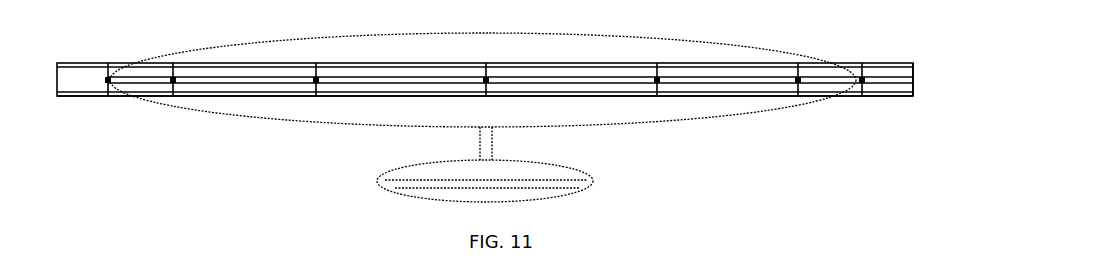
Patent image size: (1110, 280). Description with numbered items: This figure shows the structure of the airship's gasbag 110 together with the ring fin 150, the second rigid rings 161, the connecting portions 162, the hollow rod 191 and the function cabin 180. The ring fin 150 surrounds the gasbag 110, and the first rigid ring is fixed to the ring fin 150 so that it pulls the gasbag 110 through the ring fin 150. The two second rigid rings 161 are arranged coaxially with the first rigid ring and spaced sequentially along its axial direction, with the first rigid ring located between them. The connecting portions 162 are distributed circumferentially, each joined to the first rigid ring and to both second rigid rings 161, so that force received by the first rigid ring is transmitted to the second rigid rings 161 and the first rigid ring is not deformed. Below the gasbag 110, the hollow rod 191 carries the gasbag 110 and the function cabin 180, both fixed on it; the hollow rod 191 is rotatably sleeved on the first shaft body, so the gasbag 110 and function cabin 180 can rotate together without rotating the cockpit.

The gasbag 110 is at (710, 53).
The second rigid ring 161 is at (838, 81).
The ring fin 150 is at (863, 80).
The connecting portion 162 is at (912, 86).
The hollow rod 191 is at (486, 148).
The function cabin 180 is at (570, 183).